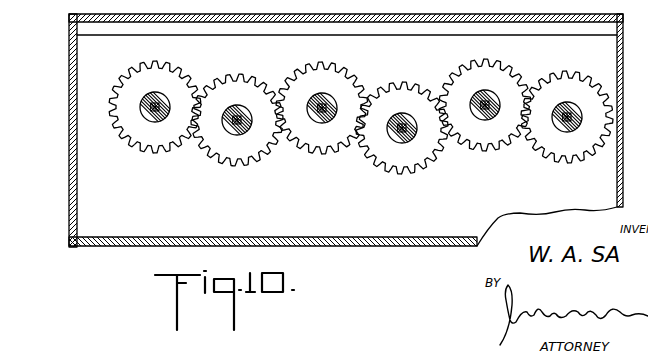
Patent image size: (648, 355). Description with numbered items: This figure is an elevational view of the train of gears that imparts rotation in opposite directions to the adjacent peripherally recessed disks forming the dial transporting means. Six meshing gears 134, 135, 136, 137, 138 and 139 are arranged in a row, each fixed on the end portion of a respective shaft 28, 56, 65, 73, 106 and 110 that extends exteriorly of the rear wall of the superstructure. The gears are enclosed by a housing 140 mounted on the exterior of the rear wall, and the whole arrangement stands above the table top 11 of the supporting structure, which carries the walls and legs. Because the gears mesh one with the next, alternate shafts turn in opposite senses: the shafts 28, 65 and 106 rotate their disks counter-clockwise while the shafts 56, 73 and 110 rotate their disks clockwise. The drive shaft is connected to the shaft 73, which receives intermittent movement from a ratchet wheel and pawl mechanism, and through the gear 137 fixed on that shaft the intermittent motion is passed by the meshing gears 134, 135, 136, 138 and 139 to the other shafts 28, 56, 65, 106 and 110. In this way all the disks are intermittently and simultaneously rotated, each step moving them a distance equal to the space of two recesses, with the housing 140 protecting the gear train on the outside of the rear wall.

The housing 140 is at (70, 131).
The table top 11 is at (372, 247).
The gear 134 is at (168, 83).
The gear 135 is at (248, 90).
The gear 136 is at (338, 83).
The gear 137 is at (409, 91).
The gear 138 is at (505, 83).
The gear 139 is at (575, 87).
The shaft 28 is at (153, 122).
The shaft 56 is at (236, 135).
The shaft 65 is at (320, 123).
The shaft 73 is at (402, 143).
The shaft 106 is at (485, 120).
The shaft 110 is at (567, 132).